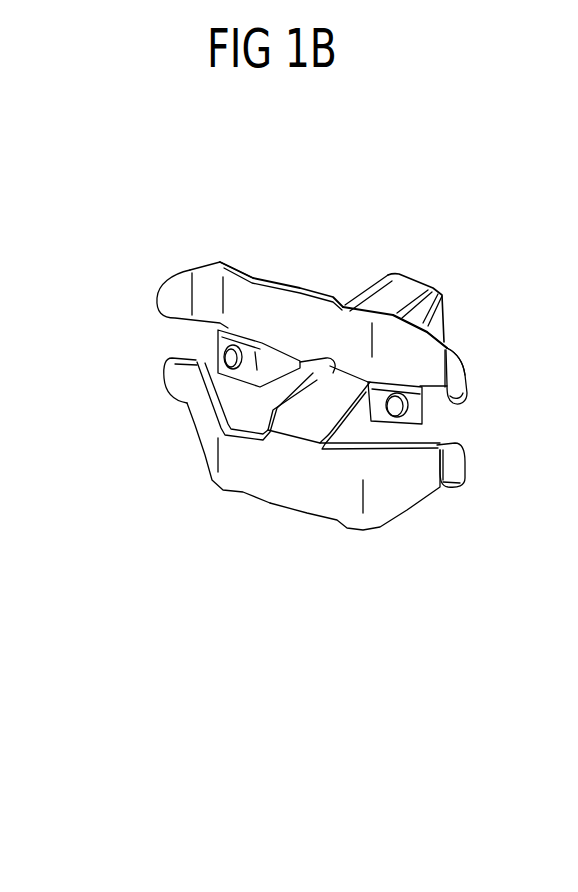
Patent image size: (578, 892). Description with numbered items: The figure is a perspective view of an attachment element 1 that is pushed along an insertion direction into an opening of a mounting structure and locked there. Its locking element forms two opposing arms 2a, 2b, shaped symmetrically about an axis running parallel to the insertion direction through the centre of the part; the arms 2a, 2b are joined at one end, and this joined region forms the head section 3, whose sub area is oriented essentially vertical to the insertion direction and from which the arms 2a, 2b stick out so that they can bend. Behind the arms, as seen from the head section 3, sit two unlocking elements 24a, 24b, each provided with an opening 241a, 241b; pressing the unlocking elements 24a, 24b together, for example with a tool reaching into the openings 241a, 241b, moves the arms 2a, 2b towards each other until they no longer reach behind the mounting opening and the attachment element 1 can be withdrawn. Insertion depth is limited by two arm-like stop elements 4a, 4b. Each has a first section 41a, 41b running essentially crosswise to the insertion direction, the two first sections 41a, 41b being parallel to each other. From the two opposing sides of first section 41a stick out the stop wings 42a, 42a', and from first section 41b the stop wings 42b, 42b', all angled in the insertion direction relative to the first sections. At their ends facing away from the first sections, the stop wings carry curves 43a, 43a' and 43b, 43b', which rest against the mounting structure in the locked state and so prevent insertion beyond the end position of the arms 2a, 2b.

The attachment element 1 is at (413, 265).
The arm 2a is at (463, 393).
The arm 2b is at (362, 278).
The head section 3 is at (432, 287).
The stop element 4a is at (280, 307).
The stop element 4b is at (300, 498).
The first section 41a is at (313, 310).
The first section 41b is at (270, 493).
The stop wing 42a is at (455, 320).
The stop wing 42a' is at (221, 258).
The stop wing 42b is at (354, 482).
The stop wing 42b' is at (227, 427).
The curve 43a is at (493, 356).
The curve 43a' is at (185, 265).
The curve 43b is at (466, 496).
The curve 43b' is at (151, 398).
The unlocking element 24a is at (423, 425).
The unlocking element 24b is at (212, 340).
The opening 241a is at (410, 407).
The opening 241b is at (222, 357).